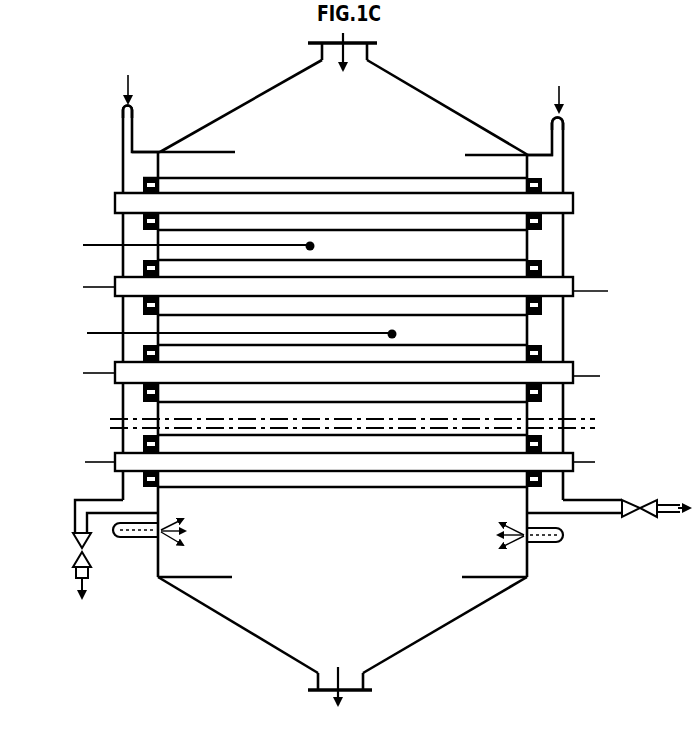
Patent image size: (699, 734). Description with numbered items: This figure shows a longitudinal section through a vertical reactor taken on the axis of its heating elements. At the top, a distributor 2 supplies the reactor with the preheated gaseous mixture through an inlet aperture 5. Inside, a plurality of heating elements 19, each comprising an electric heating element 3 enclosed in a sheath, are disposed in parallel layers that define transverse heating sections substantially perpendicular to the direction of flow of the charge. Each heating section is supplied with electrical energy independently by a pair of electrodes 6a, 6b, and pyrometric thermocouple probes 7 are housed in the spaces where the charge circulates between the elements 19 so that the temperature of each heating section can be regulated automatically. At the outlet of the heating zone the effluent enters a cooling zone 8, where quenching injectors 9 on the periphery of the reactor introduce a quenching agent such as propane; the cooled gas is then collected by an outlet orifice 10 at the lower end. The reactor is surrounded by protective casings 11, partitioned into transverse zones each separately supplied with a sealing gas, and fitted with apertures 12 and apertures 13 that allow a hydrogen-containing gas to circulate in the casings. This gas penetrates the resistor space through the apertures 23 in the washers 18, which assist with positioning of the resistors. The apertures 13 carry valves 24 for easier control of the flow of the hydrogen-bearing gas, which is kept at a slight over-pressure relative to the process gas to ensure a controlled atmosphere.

The distributor 2 is at (262, 93).
The electric heating element 3 is at (509, 279).
The inlet aperture 5 is at (320, 52).
The electrode 6a is at (115, 203).
The electrode 6b is at (573, 207).
The pyrometric thermocouple probe 7 is at (95, 245).
The cooling zone 8 is at (432, 637).
The quenching injector 9 is at (135, 540).
The outlet orifice 10 is at (357, 677).
The protective casing 11 is at (122, 399).
The aperture 12 is at (132, 131).
The aperture 13 is at (88, 518).
The washer 18 is at (543, 436).
The heating element 19 is at (512, 317).
The aperture 23 is at (544, 481).
The valve 24 is at (90, 553).